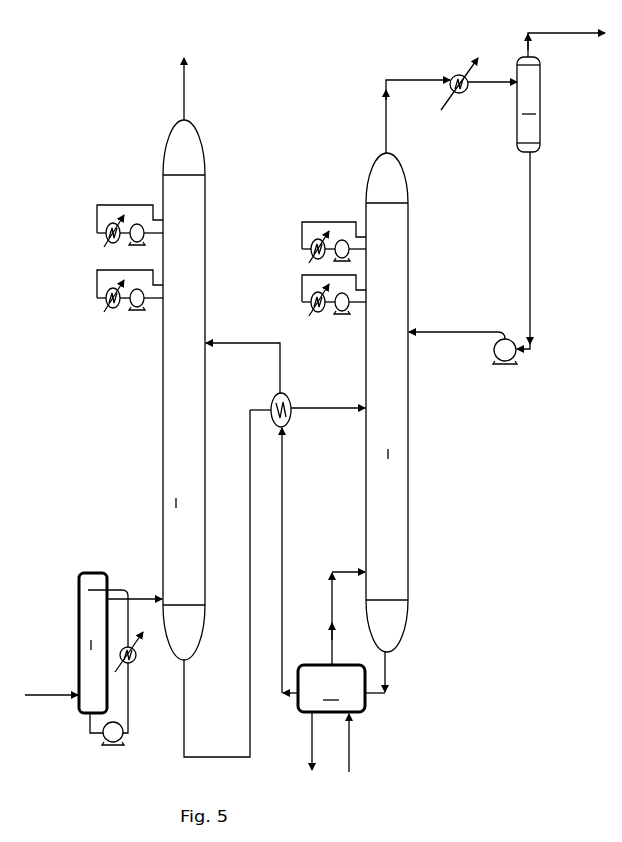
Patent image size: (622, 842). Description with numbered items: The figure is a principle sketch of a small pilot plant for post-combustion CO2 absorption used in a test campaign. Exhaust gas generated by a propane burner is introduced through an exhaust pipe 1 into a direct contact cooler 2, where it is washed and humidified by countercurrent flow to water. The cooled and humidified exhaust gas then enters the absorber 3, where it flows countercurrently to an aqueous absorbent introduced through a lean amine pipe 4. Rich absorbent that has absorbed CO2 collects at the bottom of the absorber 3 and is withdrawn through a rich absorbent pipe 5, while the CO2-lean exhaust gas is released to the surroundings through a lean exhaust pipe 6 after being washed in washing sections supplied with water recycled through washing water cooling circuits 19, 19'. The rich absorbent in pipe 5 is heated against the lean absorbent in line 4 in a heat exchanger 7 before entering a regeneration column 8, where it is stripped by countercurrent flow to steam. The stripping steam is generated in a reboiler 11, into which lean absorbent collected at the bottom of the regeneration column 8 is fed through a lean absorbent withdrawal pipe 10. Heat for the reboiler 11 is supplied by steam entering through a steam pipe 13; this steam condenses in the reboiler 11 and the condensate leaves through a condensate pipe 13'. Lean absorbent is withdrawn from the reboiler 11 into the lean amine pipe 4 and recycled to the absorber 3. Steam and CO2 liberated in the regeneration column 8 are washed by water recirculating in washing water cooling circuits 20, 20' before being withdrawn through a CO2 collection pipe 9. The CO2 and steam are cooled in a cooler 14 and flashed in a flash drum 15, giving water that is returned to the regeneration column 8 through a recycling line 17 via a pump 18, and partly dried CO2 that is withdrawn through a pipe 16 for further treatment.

The exhaust pipe 1 is at (46, 700).
The direct contact cooler 2 is at (120, 659).
The first distillation column 3 is at (184, 390).
The lean amine pipe 4 is at (232, 341).
The rich absorbent pipe 5 is at (183, 716).
The lean exhaust pipe 6 is at (181, 92).
The heat exchanger 7 is at (291, 397).
The regeneration column 8 is at (387, 402).
The CO2 collection pipe 9 is at (383, 112).
The lean absorbent withdrawal pipe 10 is at (388, 680).
The reboiler 11 is at (333, 570).
The steam pipe 13 is at (379, 743).
The condensate pipe 13' is at (285, 748).
The cooler 14 is at (455, 96).
The flash drum 15 is at (529, 104).
The pipe 16 is at (605, 40).
The recycling line 17 is at (531, 323).
The pump 18 is at (499, 362).
The washing water cooling circuit 19 is at (98, 280).
The washing water cooling circuit 19' is at (98, 215).
The washing water cooling circuit 20 is at (314, 210).
The washing water cooling circuit 20' is at (311, 275).